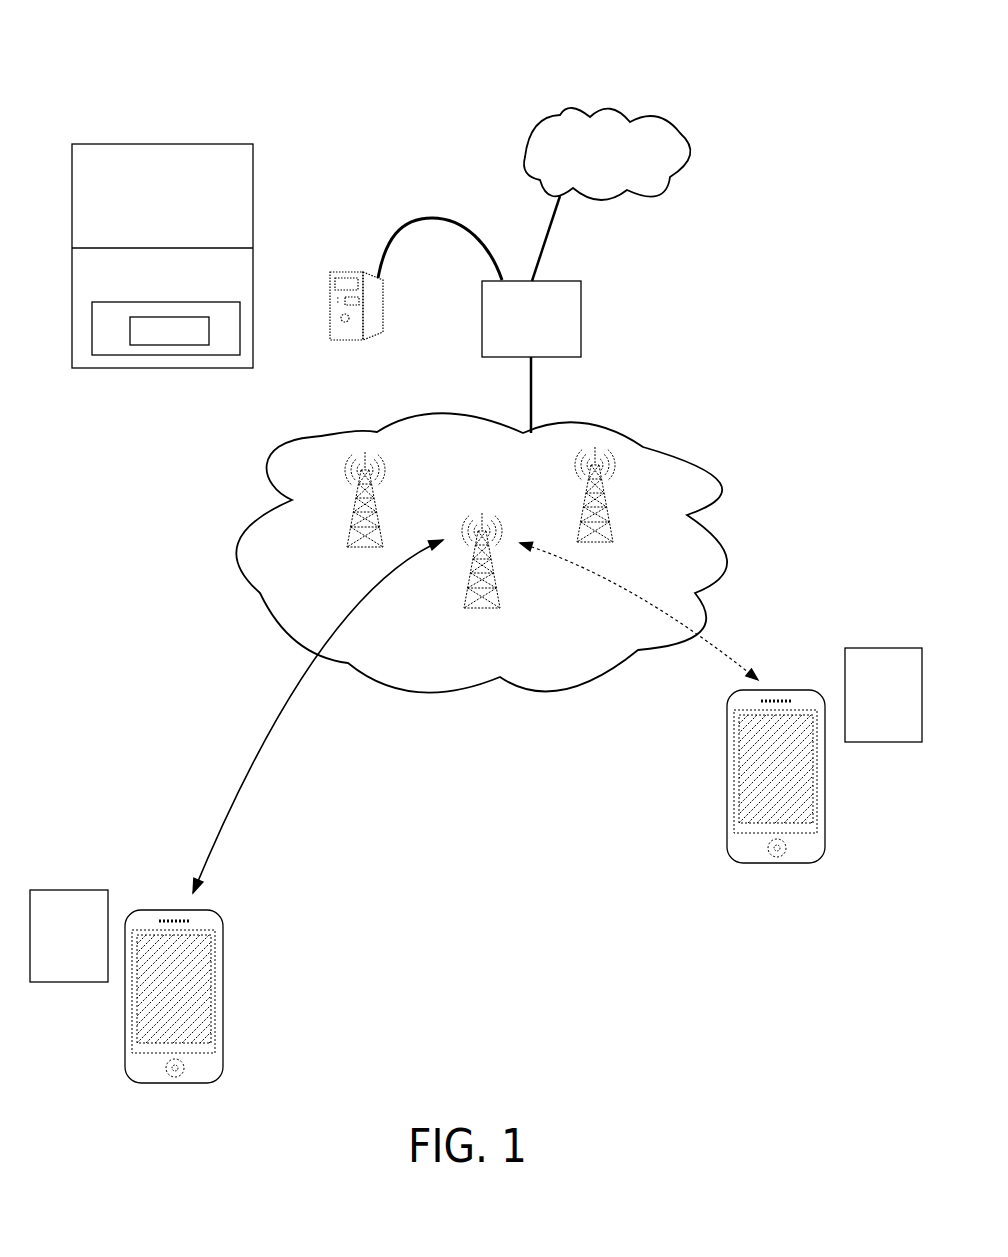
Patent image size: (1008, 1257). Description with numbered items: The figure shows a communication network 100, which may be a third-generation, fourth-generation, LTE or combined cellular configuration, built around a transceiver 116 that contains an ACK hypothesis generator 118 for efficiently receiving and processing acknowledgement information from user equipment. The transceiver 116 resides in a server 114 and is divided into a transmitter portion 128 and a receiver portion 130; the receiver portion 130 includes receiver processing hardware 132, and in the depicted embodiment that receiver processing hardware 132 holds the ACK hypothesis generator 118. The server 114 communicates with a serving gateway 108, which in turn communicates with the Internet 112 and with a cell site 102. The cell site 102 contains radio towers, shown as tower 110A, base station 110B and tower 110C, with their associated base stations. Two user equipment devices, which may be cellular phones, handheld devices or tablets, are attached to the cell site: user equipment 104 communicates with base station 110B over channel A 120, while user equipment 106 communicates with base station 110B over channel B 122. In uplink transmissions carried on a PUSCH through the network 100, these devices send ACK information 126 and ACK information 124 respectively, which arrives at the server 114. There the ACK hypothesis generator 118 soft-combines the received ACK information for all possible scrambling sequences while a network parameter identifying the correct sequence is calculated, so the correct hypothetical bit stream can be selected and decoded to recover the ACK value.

The communication network 100 is at (166, 36).
The cell site 102 is at (640, 434).
The user equipment 104 is at (825, 807).
The user equipment 106 is at (222, 1027).
The serving gateway 108 is at (582, 318).
The radio tower 110A is at (345, 547).
The base station 110B is at (490, 607).
The radio tower 110C is at (612, 527).
The Internet 112 is at (565, 113).
The server 114 is at (357, 272).
The transceiver 116 is at (270, 162).
The ACK hypothesis generator 118 is at (130, 330).
The channel A 120 is at (705, 640).
The channel B 122 is at (275, 712).
The ACK information 124 is at (68, 888).
The ACK information 126 is at (888, 645).
The transmitter portion 128 is at (72, 190).
The receiver portion 130 is at (77, 271).
The receiver processing hardware 132 is at (90, 328).